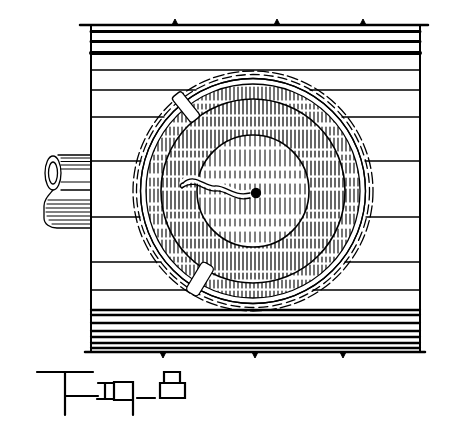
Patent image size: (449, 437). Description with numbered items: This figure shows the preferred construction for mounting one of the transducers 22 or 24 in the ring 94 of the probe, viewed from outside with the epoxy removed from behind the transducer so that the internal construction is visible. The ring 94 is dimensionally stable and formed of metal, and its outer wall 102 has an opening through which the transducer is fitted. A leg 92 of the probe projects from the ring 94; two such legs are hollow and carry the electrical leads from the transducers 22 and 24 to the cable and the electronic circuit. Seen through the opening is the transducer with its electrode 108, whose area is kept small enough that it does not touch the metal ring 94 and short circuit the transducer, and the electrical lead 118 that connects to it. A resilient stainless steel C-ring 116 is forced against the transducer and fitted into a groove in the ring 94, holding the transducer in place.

The ring 94 is at (108, 57).
The legs 92 is at (72, 156).
The transducer 22 is at (170, 238).
The transducer 24 is at (253, 191).
The outer wall 102 is at (160, 145).
The electrode 108 is at (279, 139).
The C-ring 116 is at (198, 280).
The electrical lead 118 is at (182, 183).